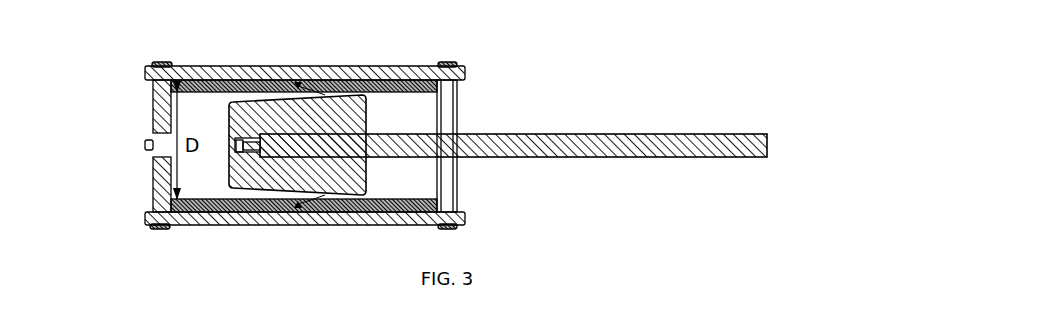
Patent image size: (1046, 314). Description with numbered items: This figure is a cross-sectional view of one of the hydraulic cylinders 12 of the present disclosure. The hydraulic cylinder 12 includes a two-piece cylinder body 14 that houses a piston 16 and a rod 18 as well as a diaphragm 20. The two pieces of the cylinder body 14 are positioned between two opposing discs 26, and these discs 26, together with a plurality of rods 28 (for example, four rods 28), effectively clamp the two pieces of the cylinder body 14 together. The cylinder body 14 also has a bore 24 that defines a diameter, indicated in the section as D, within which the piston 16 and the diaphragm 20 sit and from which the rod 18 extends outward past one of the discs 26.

The hydraulic cylinder 12 is at (125, 70).
The cylinder body 14 is at (221, 86).
The piston 16 is at (241, 156).
The rod 18 is at (650, 131).
The diaphragm 20 is at (239, 182).
The bore 24 is at (425, 178).
The disc 26 is at (149, 167).
The rod 28 is at (429, 57).